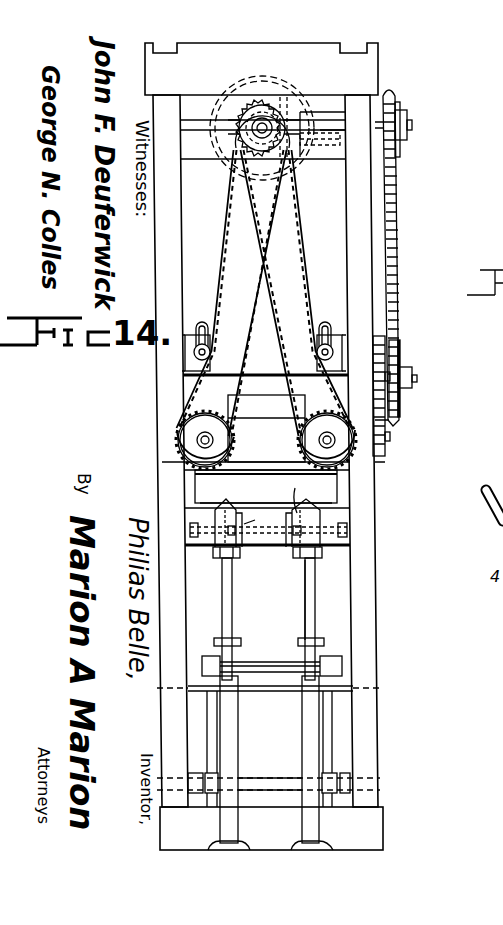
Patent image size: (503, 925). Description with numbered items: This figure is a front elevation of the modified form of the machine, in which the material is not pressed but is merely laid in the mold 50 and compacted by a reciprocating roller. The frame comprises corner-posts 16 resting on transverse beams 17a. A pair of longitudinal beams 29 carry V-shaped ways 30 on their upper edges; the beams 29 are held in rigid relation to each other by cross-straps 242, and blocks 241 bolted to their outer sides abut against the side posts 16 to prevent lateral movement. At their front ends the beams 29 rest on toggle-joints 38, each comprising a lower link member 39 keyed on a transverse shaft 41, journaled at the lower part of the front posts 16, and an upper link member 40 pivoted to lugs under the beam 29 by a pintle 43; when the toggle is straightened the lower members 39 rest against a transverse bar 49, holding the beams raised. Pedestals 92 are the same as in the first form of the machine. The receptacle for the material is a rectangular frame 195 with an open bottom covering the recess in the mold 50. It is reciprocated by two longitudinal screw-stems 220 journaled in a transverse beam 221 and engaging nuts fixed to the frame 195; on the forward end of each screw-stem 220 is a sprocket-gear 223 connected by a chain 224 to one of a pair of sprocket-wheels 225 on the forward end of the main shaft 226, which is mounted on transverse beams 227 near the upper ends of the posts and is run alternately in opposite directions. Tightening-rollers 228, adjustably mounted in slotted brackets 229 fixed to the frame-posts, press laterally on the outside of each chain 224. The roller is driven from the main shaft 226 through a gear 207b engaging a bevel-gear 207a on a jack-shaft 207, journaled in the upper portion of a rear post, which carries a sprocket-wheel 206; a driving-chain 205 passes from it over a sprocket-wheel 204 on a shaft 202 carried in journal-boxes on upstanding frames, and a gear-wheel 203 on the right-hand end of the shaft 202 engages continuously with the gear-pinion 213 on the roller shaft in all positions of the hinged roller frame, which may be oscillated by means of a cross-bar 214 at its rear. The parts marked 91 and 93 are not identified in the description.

The corner-posts 16 is at (177, 614).
The transverse beams 17a is at (367, 830).
The longitudinal beams 29 is at (215, 506).
The V-shaped ways 30 is at (388, 497).
The toggle-joint 38 is at (325, 621).
The lower link member 39 is at (328, 741).
The upper link member 40 is at (307, 602).
The transverse shaft 41 is at (270, 784).
The pintle 43 is at (213, 556).
The transverse bar 49 is at (270, 693).
The mold 50 is at (200, 483).
The link 91 is at (275, 500).
The pedestals 92 is at (241, 641).
The foot block 93 is at (225, 810).
The rectangular frame 195 is at (266, 487).
The shaft 202 is at (417, 378).
The gear-wheel 203 is at (393, 334).
The sprocket-wheel 204 is at (402, 350).
The driving-chain 205 is at (398, 244).
The sprocket-wheel 206 is at (400, 150).
The jack-shaft 207 is at (412, 125).
The bevel-gear 207a is at (300, 115).
The gear 207b is at (270, 108).
The gear-pinion 213 is at (390, 452).
The cross-bar 214 is at (266, 428).
The screw-stems 220 is at (196, 440).
The transverse beam 221 is at (266, 436).
The sprocket-gear 223 is at (207, 428).
The chain 224 is at (223, 258).
The sprocket-wheels 225 is at (231, 167).
The main shaft 226 is at (253, 124).
The transverse beams 227 is at (317, 161).
The tightening-rollers 228 is at (190, 350).
The slotted brackets 229 is at (203, 321).
The blocks 241 is at (200, 512).
The cross-straps 242 is at (266, 541).